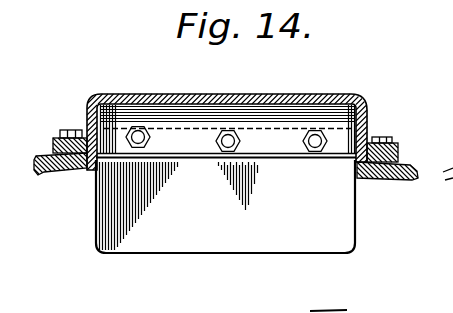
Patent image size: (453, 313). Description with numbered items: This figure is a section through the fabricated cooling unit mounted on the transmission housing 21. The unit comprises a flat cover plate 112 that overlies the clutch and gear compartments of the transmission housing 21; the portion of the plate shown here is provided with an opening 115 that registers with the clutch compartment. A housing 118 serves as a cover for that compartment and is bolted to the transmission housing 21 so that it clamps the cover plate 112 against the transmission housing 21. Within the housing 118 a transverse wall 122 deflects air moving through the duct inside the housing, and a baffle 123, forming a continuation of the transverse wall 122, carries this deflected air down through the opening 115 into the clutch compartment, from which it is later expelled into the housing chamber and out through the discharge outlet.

The housing 118 is at (331, 93).
The transverse wall 122 is at (192, 127).
The opening 115 is at (328, 160).
The baffle 123 is at (343, 228).
The cover plate 112 is at (399, 163).
The transmission housing 21 is at (43, 174).